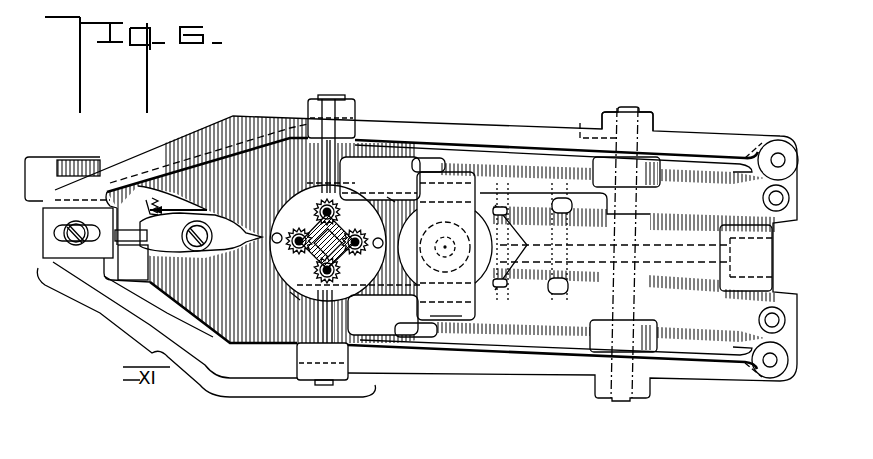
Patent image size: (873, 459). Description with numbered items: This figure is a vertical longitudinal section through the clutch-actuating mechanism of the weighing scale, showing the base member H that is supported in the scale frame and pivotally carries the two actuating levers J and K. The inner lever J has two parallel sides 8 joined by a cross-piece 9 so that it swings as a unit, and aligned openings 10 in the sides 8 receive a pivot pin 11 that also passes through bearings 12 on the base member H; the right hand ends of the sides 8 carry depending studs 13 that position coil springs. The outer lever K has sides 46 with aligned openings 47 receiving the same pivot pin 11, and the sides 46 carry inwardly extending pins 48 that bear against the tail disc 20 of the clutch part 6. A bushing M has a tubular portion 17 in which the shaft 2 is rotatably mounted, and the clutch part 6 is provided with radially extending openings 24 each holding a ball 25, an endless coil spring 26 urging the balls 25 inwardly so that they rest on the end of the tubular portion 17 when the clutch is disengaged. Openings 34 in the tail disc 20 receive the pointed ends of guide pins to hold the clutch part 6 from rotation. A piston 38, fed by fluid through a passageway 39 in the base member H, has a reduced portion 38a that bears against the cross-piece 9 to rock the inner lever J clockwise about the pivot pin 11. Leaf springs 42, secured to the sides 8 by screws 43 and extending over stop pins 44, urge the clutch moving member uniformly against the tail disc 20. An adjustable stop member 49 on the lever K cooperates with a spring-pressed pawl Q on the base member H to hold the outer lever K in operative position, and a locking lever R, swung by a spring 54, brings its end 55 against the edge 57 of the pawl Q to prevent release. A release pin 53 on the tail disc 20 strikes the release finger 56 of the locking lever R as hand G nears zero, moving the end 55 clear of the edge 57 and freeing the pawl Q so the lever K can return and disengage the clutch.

The shaft 2 is at (312, 270).
The clutch part 6 is at (294, 252).
The sides of lever J 8 is at (711, 211).
The cross-piece 9 is at (460, 318).
The openings 10 is at (609, 197).
The pivot pin 11 is at (628, 108).
The bearings 12 is at (641, 165).
The depending studs 13 is at (777, 203).
The tubular portion 17 is at (387, 197).
The tail disc 20 is at (365, 328).
The radially extending openings 24 is at (353, 217).
The ball 25 is at (407, 293).
The endless coil spring 26 is at (312, 205).
The openings in tail disc 34 is at (282, 230).
The piston 38 is at (432, 298).
The reduced portion 38a is at (446, 310).
The fluid passageway 39 is at (772, 260).
The leaf springs 42 is at (340, 183).
The screws 43 is at (562, 280).
The stop pins 44 is at (500, 283).
The sides of lever K 46 is at (547, 137).
The openings 47 is at (630, 410).
The pins 48 is at (330, 170).
The adjustable stop member 49 is at (47, 216).
The release pin 53 is at (288, 286).
The spring 54 is at (150, 205).
The end of locking lever 55 is at (143, 228).
The release finger 56 is at (290, 312).
The edge of pawl 57 is at (95, 244).
The spring-pressed pawl Q is at (127, 222).
The locking lever R is at (156, 243).
The bushing M is at (298, 249).
The outer lever K is at (500, 133).
The inner lever J is at (682, 204).
The base member H is at (733, 336).